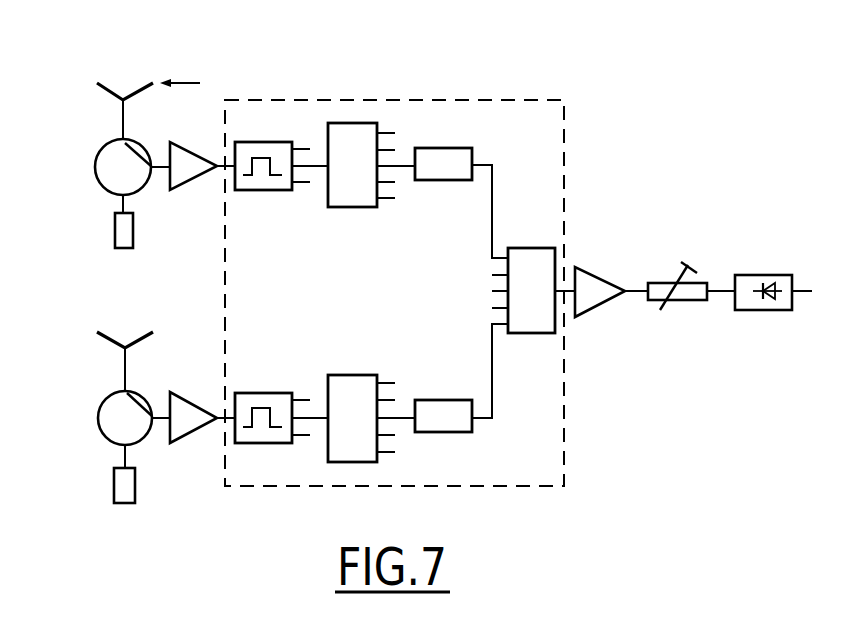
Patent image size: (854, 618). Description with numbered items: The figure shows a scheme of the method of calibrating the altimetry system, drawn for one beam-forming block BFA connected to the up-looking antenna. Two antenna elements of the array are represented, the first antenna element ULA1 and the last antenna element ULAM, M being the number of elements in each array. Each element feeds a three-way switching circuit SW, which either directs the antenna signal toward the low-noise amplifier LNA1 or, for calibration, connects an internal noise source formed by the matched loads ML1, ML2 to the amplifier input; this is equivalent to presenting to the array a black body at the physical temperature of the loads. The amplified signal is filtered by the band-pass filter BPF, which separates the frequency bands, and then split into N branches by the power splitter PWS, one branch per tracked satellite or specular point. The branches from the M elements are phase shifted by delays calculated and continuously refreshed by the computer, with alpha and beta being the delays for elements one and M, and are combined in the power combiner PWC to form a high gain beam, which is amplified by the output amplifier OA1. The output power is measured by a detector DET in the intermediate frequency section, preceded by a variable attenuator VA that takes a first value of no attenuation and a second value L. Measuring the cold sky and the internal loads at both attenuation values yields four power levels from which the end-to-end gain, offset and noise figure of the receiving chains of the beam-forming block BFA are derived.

The antenna element ULA1 is at (117, 112).
The antenna element ULAM is at (120, 365).
The switching circuit SW is at (102, 148).
The matched load ML1 is at (120, 232).
The matched load ML2 is at (135, 485).
The low-noise amplifier LNA1 is at (192, 400).
The band-pass filter BPF is at (262, 191).
The power splitter PWS is at (375, 240).
The power combiner PWC is at (527, 248).
The output amplifier OA1 is at (595, 272).
The variable attenuator VA is at (667, 283).
The detector DET is at (760, 275).
The beam-forming block BFA is at (527, 58).